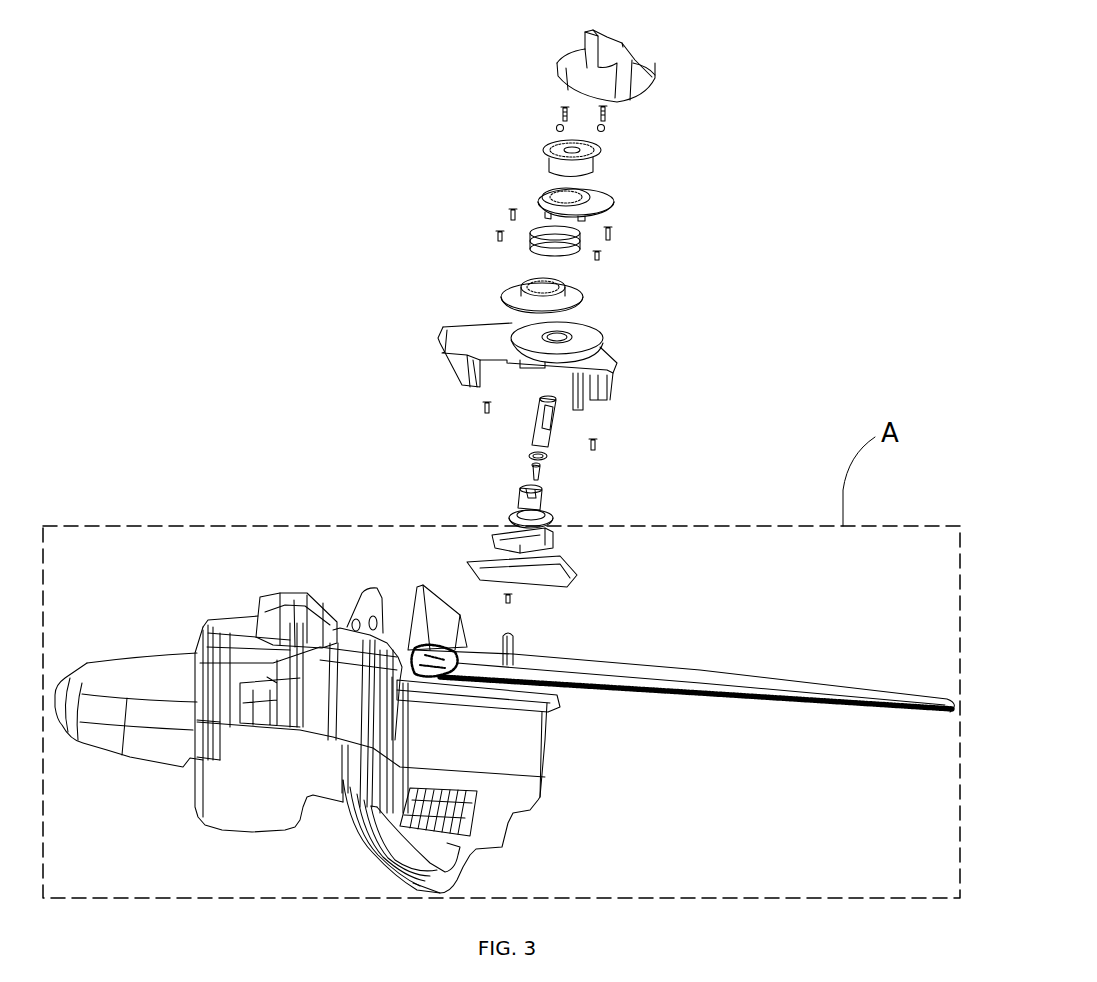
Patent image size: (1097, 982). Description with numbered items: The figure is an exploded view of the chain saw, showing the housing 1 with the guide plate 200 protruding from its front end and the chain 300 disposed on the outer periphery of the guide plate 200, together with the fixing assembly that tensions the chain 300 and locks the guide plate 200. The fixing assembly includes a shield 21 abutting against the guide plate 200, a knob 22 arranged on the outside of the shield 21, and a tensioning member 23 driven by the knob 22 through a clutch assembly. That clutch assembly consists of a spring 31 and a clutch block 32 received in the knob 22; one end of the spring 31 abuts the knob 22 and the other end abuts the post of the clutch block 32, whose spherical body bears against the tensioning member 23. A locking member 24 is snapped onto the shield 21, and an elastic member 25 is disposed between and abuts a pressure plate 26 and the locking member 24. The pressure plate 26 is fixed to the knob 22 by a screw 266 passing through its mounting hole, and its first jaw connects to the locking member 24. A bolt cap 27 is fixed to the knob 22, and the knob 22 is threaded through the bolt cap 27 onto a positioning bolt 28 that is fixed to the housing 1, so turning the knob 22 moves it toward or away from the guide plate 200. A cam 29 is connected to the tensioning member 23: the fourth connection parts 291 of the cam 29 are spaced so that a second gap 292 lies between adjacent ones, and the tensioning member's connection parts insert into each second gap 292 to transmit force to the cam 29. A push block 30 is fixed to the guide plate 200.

The housing 1 is at (497, 748).
The shield 21 is at (605, 362).
The knob 22 is at (643, 66).
The tensioning member 23 is at (606, 155).
The locking member 24 is at (586, 297).
The elastic member 25 is at (532, 230).
The pressure plate 26 is at (535, 192).
The screw 266 is at (500, 237).
The bolt cap 27 is at (537, 432).
The positioning bolt 28 is at (513, 638).
The cam 29 is at (535, 507).
The fourth connection parts 291 is at (522, 485).
The second gap 292 is at (525, 490).
The push block 30 is at (553, 552).
The spring 31 is at (608, 113).
The clutch block 32 is at (606, 130).
The guide plate 200 is at (837, 690).
The chain 300 is at (760, 698).